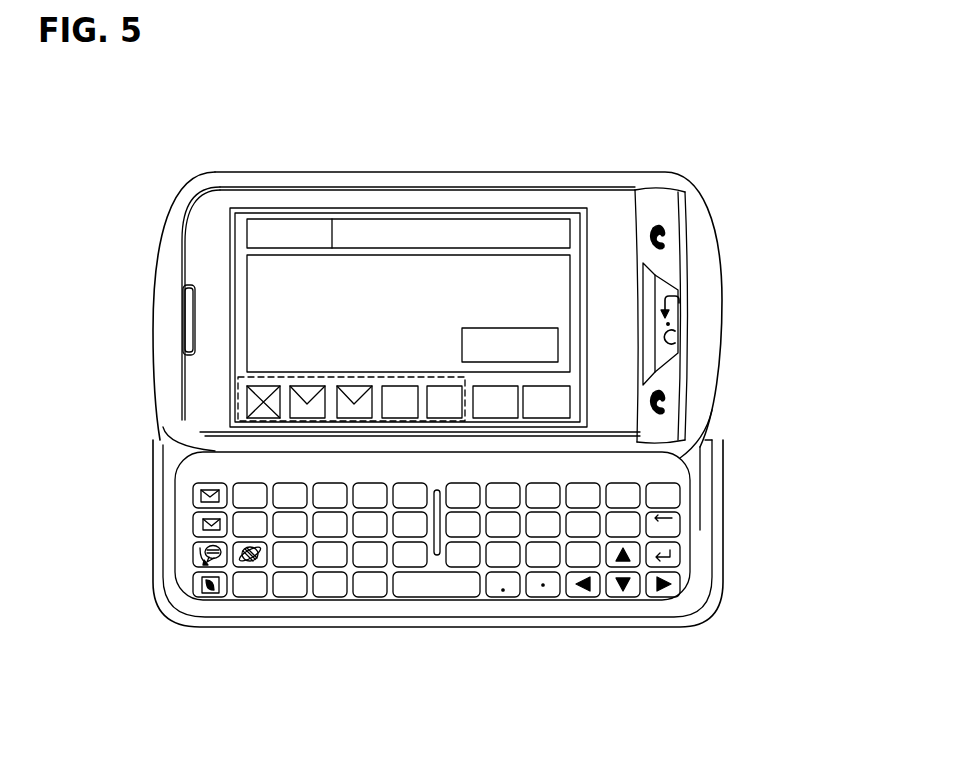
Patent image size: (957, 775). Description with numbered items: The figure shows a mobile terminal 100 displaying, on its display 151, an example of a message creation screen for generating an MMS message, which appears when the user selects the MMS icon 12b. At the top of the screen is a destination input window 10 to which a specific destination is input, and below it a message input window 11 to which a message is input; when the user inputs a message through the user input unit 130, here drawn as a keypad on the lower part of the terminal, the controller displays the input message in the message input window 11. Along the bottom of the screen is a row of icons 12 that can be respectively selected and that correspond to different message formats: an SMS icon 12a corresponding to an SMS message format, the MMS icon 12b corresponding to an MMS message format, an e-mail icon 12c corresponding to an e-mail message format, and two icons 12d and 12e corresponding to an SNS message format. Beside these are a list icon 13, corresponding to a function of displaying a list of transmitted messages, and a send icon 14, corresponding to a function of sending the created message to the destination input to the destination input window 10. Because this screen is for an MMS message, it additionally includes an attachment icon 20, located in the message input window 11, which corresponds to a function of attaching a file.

The mobile terminal 100 is at (545, 146).
The destination input window 10 is at (397, 235).
The message input window 11 is at (246, 312).
The icons 12 is at (238, 397).
The SMS icon 12a is at (261, 410).
The MMS icon 12b is at (306, 410).
The e-mail icon 12c is at (351, 410).
The SNS icon 12d is at (397, 410).
The SNS icon 12e is at (440, 410).
The list icon 13 is at (492, 410).
The send icon 14 is at (540, 410).
The attachment icon 20 is at (558, 345).
The display 151 is at (587, 270).
The user input unit 130 is at (688, 506).